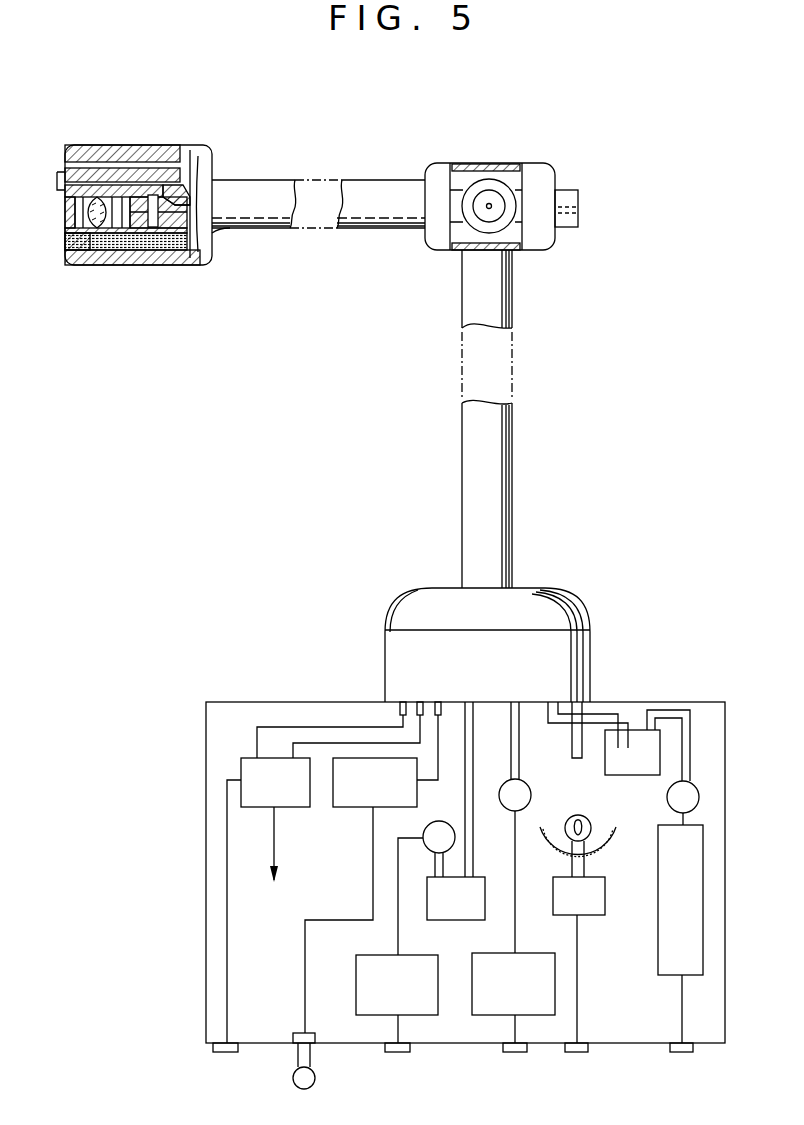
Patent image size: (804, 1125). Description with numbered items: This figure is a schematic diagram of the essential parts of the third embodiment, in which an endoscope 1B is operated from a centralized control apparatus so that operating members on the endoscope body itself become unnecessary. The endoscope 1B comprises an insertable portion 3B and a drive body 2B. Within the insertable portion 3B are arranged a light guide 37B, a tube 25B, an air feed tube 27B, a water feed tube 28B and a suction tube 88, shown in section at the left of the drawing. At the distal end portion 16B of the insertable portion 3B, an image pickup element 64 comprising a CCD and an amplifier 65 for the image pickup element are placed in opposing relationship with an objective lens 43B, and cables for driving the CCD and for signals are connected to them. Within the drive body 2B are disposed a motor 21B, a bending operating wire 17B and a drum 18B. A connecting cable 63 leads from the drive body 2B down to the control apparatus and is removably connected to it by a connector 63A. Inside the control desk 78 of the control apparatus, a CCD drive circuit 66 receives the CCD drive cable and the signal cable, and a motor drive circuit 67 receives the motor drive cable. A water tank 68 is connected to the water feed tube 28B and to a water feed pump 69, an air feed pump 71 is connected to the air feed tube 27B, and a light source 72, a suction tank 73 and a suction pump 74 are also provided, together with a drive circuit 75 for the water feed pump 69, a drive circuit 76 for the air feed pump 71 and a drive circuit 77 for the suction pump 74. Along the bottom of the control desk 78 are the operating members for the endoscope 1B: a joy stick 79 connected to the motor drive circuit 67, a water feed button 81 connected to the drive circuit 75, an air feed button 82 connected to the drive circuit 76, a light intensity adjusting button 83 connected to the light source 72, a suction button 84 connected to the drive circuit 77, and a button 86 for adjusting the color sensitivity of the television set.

The endoscope 1B is at (348, 170).
The drive body 2B is at (488, 156).
The insertable portion 3B is at (378, 226).
The distal end portion 16B is at (70, 212).
The bending operating wire 17B is at (462, 172).
The drum 18B is at (492, 216).
The motor 21B is at (500, 188).
The tube 25B is at (112, 180).
The air feed tube 27B is at (185, 201).
The water feed tube 28B is at (180, 183).
The light guide 37B is at (68, 240).
The objective lens 43B is at (91, 226).
The connecting cable 63 is at (500, 478).
The connector 63A is at (448, 600).
The image pickup element 64 is at (126, 229).
The amplifier 65 is at (163, 219).
The CCD drive circuit 66 is at (241, 770).
The motor drive circuit 67 is at (350, 807).
The water tank 68 is at (487, 884).
The water feed pump 69 is at (450, 829).
The air feed pump 71 is at (502, 786).
The light source 72 is at (588, 832).
The suction tank 73 is at (636, 746).
The suction pump 74 is at (667, 797).
The drive circuit 75 is at (356, 980).
The drive circuit 76 is at (541, 961).
The drive circuit 77 is at (658, 910).
The control desk 78 is at (648, 1044).
The joy stick 79 is at (308, 1080).
The water feed button 81 is at (405, 1053).
The air feed button 82 is at (515, 1053).
The light intensity adjusting button 83 is at (579, 1053).
The suction button 84 is at (690, 1053).
The button 86 is at (231, 1053).
The suction tube 88 is at (143, 165).